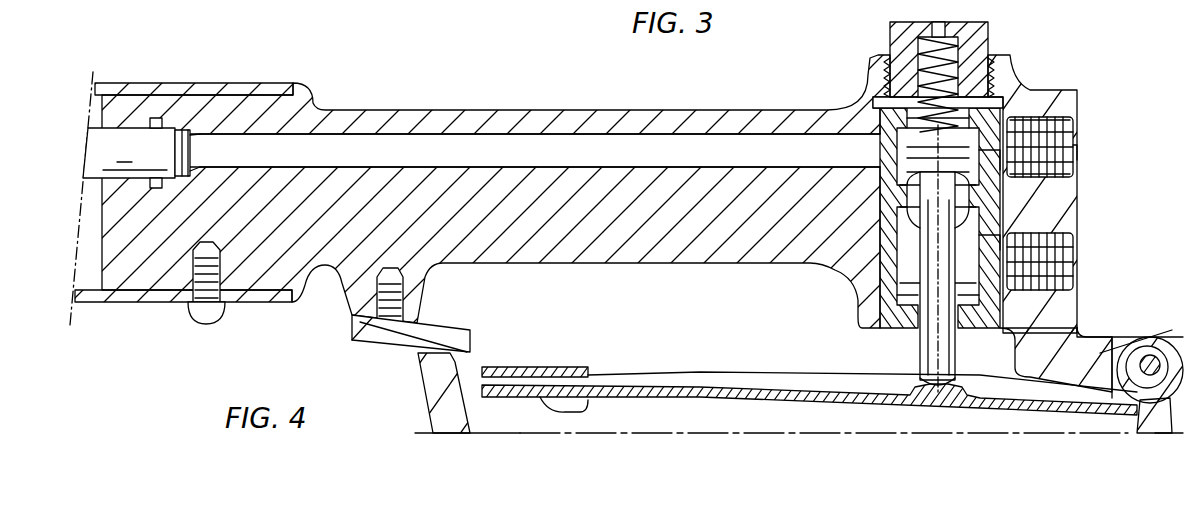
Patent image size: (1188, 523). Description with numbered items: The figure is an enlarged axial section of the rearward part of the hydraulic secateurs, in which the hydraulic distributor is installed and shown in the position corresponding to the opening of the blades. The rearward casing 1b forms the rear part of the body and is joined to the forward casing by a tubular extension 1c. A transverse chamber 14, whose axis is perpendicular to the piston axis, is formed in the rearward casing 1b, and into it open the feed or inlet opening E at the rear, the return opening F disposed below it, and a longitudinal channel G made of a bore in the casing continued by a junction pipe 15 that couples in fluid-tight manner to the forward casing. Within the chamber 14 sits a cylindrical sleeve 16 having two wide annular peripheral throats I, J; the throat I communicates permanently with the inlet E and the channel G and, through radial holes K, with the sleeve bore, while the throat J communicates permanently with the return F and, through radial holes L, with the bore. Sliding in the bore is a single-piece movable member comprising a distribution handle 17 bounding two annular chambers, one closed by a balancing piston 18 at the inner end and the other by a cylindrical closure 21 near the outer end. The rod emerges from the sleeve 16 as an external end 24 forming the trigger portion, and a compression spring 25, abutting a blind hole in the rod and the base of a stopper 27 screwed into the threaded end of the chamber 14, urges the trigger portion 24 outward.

The rearward casing 1b is at (490, 197).
The tubular extension 1c is at (95, 293).
The junction pipe 15 is at (142, 158).
The longitudinal channel G is at (367, 150).
The distribution handle 17 is at (920, 235).
The stopper 27 is at (977, 38).
The compression spring 25 is at (950, 73).
The transverse chamber 14 is at (1023, 117).
The cylindrical sleeve 16 is at (1080, 120).
The balancing piston 18 is at (1078, 137).
The feed or inlet opening E is at (1078, 152).
The annular peripheral throat I is at (983, 160).
The radial holes K is at (970, 180).
The radial holes L is at (968, 218).
The annular peripheral throat J is at (983, 240).
The return opening F is at (1033, 260).
The cylindrical closure 21 is at (1047, 300).
The external end forming the trigger portion 24 is at (940, 353).